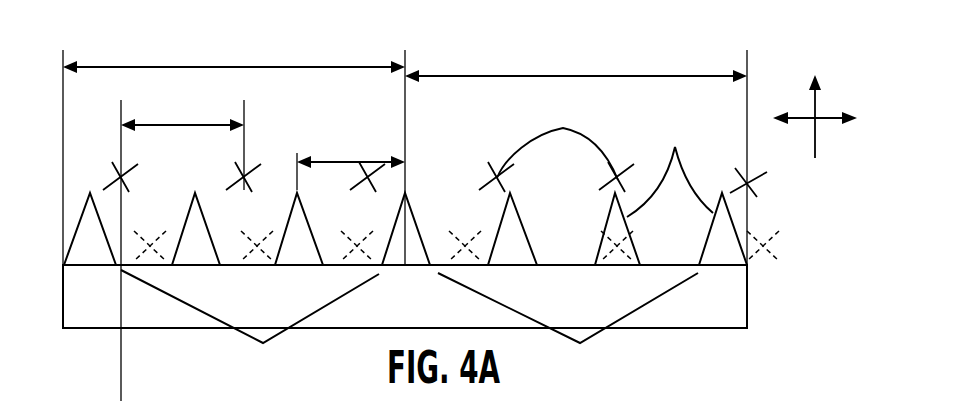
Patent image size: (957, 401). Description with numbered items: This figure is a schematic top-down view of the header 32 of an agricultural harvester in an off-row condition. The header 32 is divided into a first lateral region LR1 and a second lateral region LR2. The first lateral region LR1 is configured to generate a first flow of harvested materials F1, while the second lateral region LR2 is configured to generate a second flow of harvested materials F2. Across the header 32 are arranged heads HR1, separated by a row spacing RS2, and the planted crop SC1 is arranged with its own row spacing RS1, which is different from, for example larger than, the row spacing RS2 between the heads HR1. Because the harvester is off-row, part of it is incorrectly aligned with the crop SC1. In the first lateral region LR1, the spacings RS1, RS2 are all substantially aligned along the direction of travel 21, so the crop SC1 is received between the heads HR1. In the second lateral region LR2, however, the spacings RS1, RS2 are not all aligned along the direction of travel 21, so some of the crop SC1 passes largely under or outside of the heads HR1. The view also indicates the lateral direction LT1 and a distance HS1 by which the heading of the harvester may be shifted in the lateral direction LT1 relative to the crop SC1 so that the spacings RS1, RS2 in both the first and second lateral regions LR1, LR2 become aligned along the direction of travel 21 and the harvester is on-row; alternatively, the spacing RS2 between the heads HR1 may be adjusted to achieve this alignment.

The first lateral region LR1 is at (222, 67).
The second lateral region LR2 is at (565, 76).
The row spacing of the planted crop RS1 is at (163, 125).
The row spacing between heads RS2 is at (355, 162).
The crop SC1 is at (557, 135).
The heads HR1 is at (670, 165).
The lateral direction LT1 is at (807, 118).
The distance HS1 is at (87, 250).
The direction of travel 21 is at (816, 103).
The header 32 is at (790, 299).
The first flow of harvested materials F1 is at (173, 302).
The second flow of harvested materials F2 is at (653, 303).